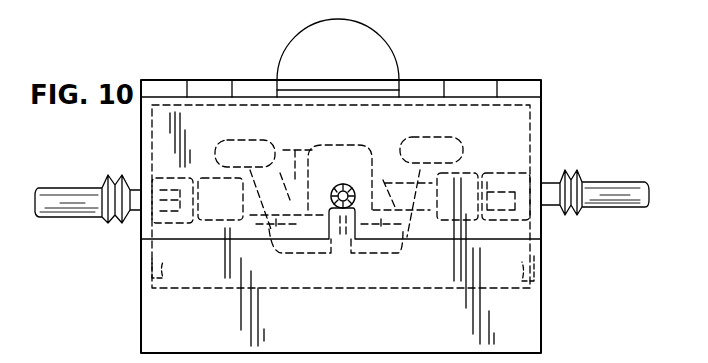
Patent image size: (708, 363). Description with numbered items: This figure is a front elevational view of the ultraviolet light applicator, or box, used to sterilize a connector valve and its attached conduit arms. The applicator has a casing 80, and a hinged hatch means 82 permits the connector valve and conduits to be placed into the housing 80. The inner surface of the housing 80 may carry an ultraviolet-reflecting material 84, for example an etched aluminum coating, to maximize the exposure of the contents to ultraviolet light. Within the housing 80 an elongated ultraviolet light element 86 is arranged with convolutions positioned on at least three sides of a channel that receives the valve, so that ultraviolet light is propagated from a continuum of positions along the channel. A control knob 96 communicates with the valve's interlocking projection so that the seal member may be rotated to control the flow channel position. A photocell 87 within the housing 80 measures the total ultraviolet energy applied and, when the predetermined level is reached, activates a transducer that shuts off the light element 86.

The casing 80 is at (497, 314).
The hinged hatch means 82 is at (167, 137).
The ultraviolet-reflecting material 84 is at (150, 251).
The elongated ultraviolet light element 86 is at (452, 142).
The photocell 87 is at (547, 261).
The control knob 96 is at (361, 60).